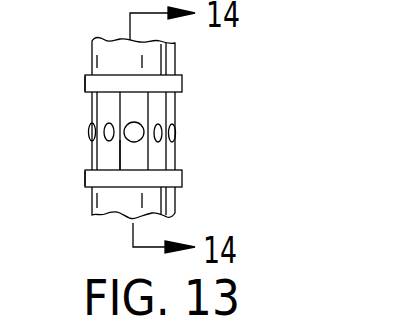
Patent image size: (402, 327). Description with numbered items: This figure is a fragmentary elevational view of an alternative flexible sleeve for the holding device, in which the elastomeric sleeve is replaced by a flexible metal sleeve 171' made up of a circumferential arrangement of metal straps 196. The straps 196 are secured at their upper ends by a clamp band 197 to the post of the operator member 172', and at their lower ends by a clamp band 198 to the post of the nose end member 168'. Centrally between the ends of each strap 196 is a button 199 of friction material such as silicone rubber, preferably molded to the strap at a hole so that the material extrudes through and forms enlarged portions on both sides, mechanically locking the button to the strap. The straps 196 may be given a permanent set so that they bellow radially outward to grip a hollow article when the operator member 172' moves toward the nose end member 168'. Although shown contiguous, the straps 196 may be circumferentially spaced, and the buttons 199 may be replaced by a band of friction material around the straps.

The flexible metal sleeve 171' is at (169, 128).
The operator member 172' is at (169, 68).
The nose end member 168' is at (165, 192).
The button 199 is at (135, 122).
The clamp band 197 is at (84, 83).
The metal straps 196 is at (135, 155).
The clamp band 198 is at (85, 178).